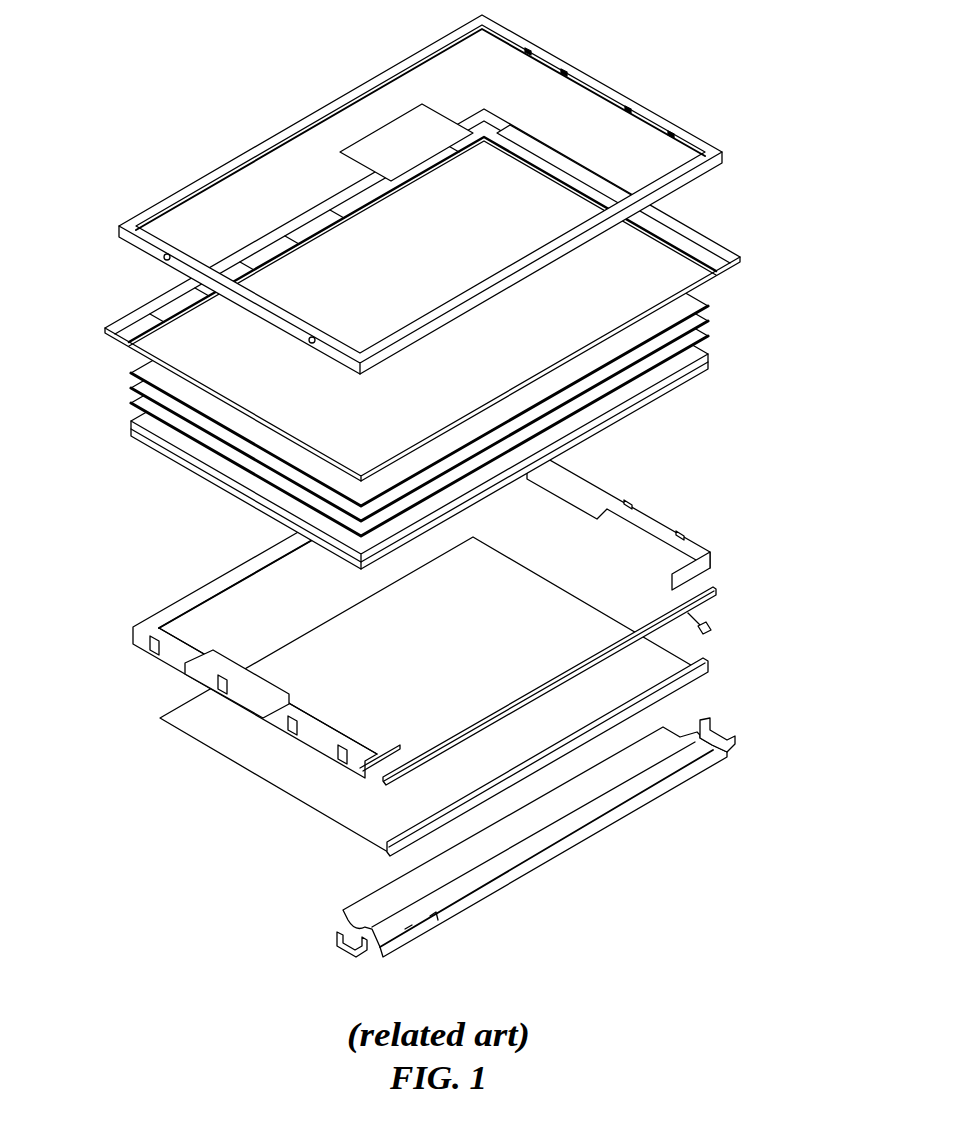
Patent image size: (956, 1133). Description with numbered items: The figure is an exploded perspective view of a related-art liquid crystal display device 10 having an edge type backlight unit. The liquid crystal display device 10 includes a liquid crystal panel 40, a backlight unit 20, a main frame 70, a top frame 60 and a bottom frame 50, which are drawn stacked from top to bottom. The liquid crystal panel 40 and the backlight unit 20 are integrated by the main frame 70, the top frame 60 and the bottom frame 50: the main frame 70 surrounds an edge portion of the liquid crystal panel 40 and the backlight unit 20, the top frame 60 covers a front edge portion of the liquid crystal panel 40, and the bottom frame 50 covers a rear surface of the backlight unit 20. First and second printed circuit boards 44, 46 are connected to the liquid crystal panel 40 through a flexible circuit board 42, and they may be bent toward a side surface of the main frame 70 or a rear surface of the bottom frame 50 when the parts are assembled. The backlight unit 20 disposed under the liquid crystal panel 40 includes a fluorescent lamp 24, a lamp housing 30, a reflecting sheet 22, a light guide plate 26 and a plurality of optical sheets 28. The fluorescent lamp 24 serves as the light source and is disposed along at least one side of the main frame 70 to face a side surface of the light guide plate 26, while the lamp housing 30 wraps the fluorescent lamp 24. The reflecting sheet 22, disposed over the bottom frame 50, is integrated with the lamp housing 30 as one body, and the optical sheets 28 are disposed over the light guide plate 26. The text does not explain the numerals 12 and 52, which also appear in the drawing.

The liquid crystal display device 10 is at (143, 576).
The backlight assembly 12 is at (453, 713).
The backlight unit 20 is at (780, 302).
The reflecting sheet 22 is at (670, 662).
The fluorescent lamp 24 is at (577, 658).
The light guide plate 26 is at (702, 363).
The optical sheets 28 is at (720, 302).
The lamp housing 30 is at (693, 675).
The liquid crystal panel 40 is at (658, 268).
The flexible circuit board 42 is at (473, 143).
The first printed circuit board 44 is at (550, 157).
The second printed circuit board 46 is at (375, 137).
The bottom frame 50 is at (473, 863).
The hook 52 is at (347, 947).
The top frame 60 is at (713, 143).
The main frame 70 is at (188, 620).